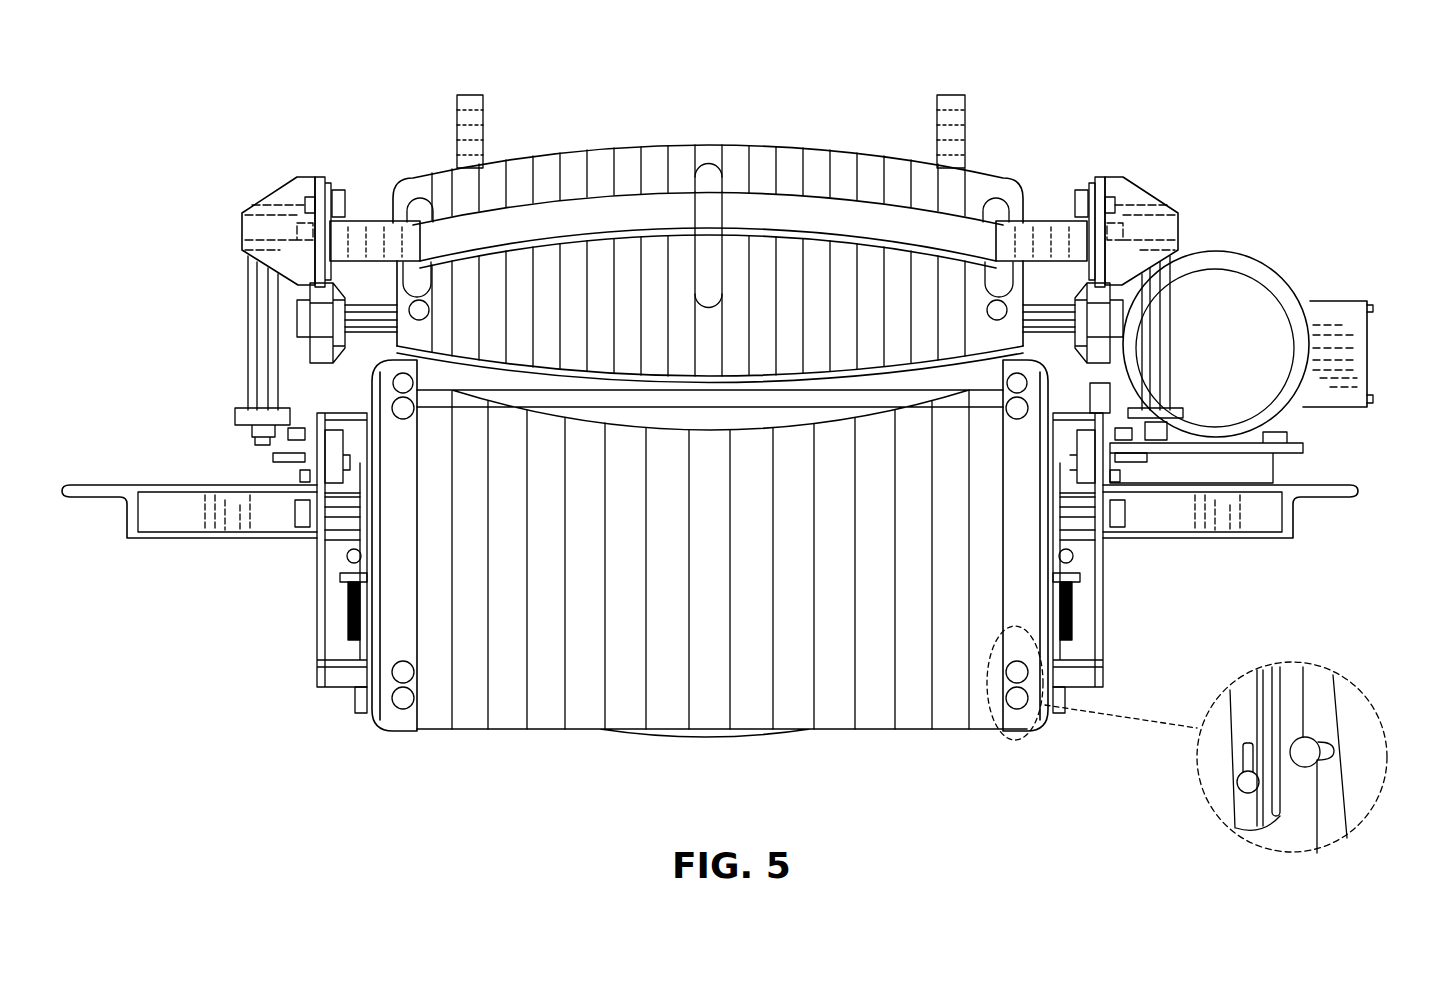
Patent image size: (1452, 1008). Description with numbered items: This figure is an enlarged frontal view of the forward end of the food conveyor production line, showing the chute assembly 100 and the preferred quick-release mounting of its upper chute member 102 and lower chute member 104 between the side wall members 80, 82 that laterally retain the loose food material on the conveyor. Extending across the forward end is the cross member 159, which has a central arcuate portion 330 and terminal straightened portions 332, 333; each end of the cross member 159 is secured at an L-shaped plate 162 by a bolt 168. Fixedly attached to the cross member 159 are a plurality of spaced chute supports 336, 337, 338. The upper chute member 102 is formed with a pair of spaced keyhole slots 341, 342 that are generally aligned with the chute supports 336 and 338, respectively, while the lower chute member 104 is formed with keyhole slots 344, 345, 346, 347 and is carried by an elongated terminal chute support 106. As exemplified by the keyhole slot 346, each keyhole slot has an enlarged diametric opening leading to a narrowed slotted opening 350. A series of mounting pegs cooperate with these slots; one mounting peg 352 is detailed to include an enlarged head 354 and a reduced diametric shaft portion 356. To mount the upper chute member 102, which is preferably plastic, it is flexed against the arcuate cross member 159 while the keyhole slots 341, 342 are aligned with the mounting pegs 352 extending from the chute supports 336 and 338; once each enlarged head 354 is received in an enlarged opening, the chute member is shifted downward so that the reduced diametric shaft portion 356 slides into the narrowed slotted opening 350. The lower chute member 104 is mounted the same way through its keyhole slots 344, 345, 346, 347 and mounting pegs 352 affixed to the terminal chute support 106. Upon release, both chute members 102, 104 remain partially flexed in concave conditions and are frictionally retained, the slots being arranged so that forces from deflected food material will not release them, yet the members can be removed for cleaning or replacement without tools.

The side wall member 80 is at (478, 122).
The side wall member 82 is at (958, 122).
The chute assembly 100 is at (718, 106).
The upper chute member 102 is at (570, 165).
The lower chute member 104 is at (868, 700).
The elongated terminal chute support 106 is at (1313, 700).
The cross member 159 is at (767, 213).
The L-shaped plate 162 is at (1095, 190).
The bolt 168 is at (1110, 205).
The central arcuate portion 330 is at (645, 205).
The terminal straightened portion 332 is at (360, 237).
The terminal straightened portion 333 is at (1050, 235).
The chute support 336 is at (418, 200).
The chute support 337 is at (708, 182).
The chute support 338 is at (998, 210).
The keyhole slot 341 is at (430, 308).
The keyhole slot 342 is at (987, 308).
The keyhole slot 344 is at (415, 412).
The keyhole slot 345 is at (1006, 412).
The keyhole slot 346 is at (1032, 704).
The keyhole slot 347 is at (398, 722).
The narrowed slotted opening 350 is at (1240, 765).
The mounting peg 352 is at (1006, 663).
The enlarged head 354 is at (1302, 768).
The reduced diametric shaft portion 356 is at (1332, 748).